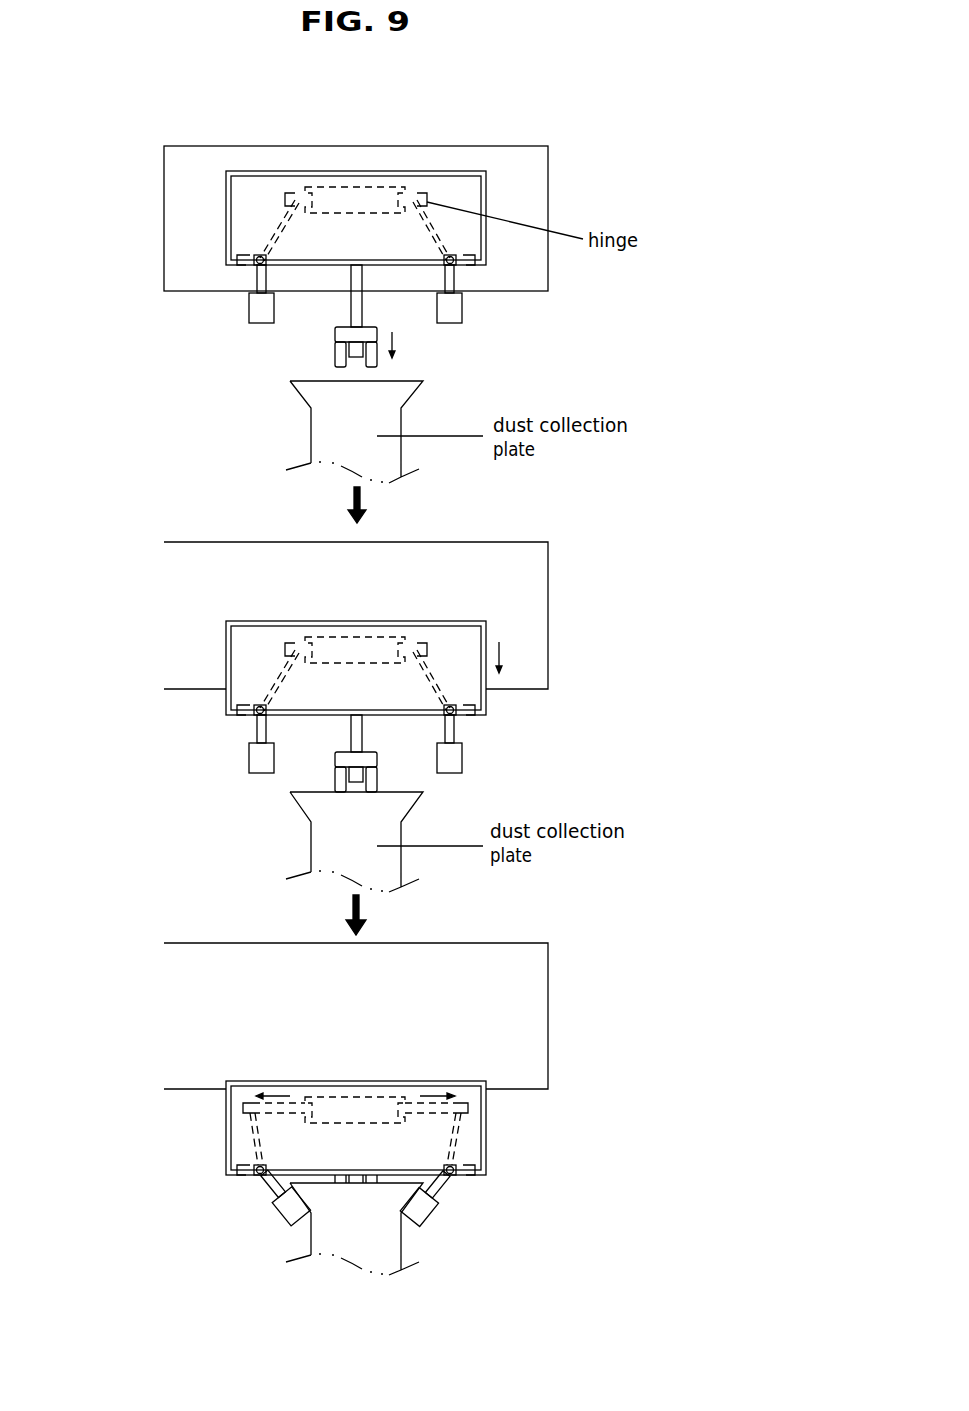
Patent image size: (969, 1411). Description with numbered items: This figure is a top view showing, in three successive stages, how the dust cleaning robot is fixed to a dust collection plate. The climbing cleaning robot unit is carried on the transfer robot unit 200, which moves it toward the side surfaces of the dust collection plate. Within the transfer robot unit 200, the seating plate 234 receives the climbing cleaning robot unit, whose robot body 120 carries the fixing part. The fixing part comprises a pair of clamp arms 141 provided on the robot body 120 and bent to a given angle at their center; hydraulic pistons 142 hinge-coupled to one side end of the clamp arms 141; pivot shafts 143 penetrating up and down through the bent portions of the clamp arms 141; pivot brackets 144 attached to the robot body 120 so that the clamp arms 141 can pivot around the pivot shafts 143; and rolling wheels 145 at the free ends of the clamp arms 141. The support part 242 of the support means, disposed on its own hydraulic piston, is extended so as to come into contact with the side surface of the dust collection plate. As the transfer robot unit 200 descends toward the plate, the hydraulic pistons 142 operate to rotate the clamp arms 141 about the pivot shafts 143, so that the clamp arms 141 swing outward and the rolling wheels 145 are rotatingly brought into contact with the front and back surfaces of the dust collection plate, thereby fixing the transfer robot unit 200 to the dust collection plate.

The transfer robot unit 200 is at (548, 155).
The robot body 120 is at (263, 174).
The seating plate 234 is at (320, 177).
The hydraulic pistons 142 is at (358, 195).
The clamp arms 141 is at (280, 223).
The pivot brackets 144 is at (238, 258).
The pivot shafts 143 is at (250, 263).
The rolling wheels 145 is at (249, 315).
The support part 242 is at (335, 353).